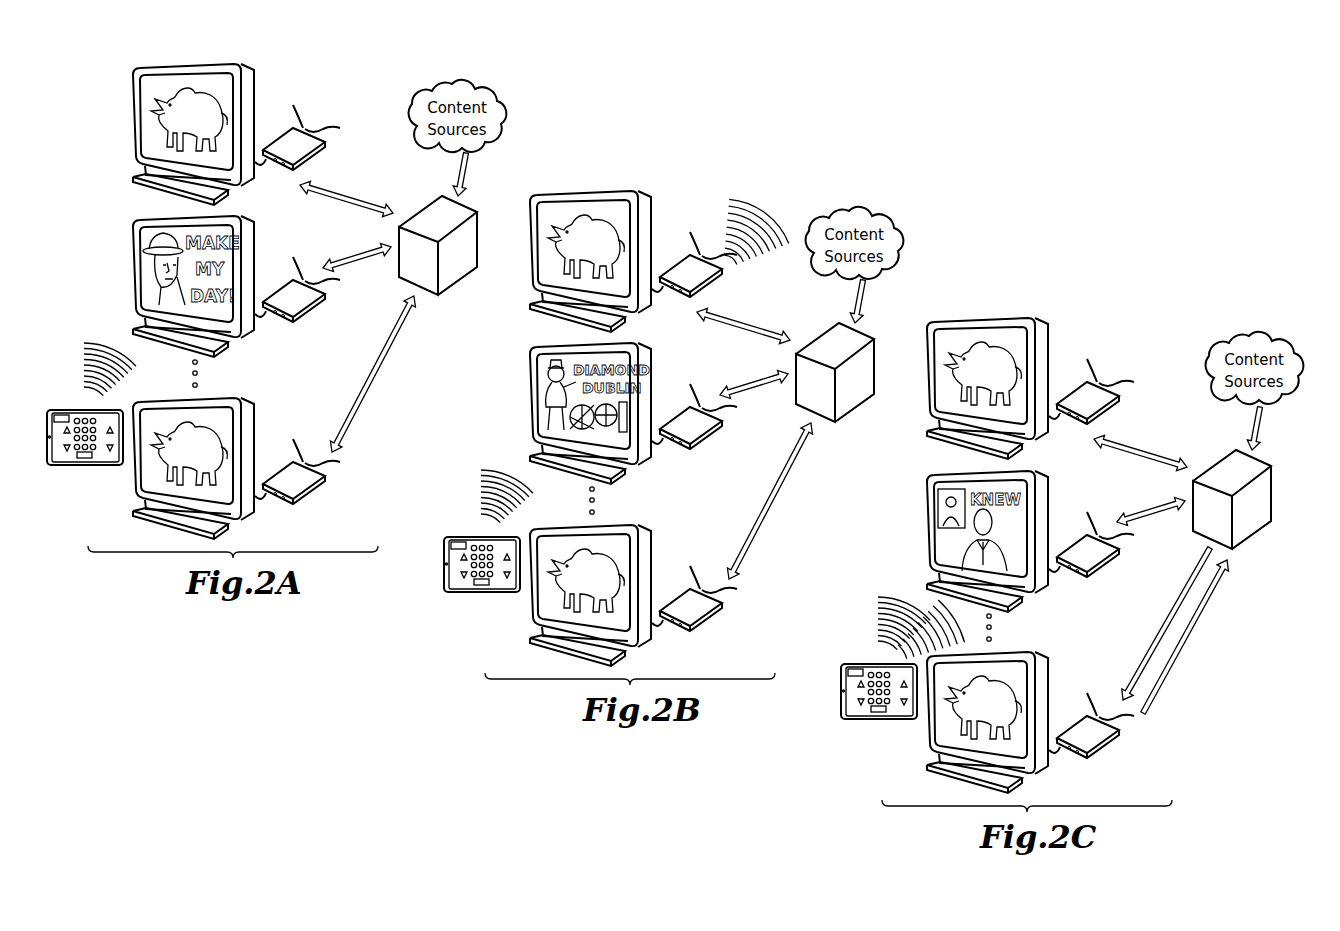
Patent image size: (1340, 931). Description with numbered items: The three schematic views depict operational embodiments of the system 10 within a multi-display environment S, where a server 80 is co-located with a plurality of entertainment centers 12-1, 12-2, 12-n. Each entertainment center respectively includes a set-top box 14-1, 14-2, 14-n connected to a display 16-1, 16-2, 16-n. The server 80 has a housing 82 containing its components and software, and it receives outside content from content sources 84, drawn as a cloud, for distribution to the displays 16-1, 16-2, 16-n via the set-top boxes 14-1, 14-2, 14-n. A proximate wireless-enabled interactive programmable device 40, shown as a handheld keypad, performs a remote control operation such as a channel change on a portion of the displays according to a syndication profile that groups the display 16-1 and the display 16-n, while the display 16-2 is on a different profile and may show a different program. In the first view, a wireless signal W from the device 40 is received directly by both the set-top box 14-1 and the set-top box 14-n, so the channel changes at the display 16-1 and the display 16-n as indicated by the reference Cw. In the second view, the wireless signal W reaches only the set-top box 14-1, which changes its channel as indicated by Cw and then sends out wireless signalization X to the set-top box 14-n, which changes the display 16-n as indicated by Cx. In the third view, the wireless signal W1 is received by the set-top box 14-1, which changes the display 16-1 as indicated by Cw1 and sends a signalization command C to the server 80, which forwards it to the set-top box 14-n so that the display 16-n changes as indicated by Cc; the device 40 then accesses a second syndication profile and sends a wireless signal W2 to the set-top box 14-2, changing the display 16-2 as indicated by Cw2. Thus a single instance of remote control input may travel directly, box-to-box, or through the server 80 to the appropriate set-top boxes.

In FIG. 2A, the system 10 is at (373, 99).
In FIG. 2B, the system 10 is at (782, 350).
In FIG. 2C, the system 10 is at (1218, 373).
In FIG. 2A, the entertainment center 12-1 is at (311, 121).
In FIG. 2B, the entertainment center 12-1 is at (713, 234).
In FIG. 2C, the entertainment center 12-1 is at (1110, 361).
In FIG. 2A, the entertainment center 12-2 is at (311, 273).
In FIG. 2B, the entertainment center 12-2 is at (713, 386).
In FIG. 2C, the entertainment center 12-2 is at (1110, 514).
In FIG. 2A, the entertainment center 12-n is at (311, 455).
In FIG. 2B, the entertainment center 12-n is at (713, 568).
In FIG. 2C, the entertainment center 12-n is at (1110, 695).
In FIG. 2A, the set-top box 14-1 is at (317, 153).
In FIG. 2B, the set-top box 14-1 is at (710, 276).
In FIG. 2C, the set-top box 14-1 is at (1107, 403).
In FIG. 2A, the set-top box 14-2 is at (317, 305).
In FIG. 2B, the set-top box 14-2 is at (710, 428).
In FIG. 2C, the set-top box 14-2 is at (1107, 556).
In FIG. 2A, the set-top box 14-n is at (317, 487).
In FIG. 2B, the set-top box 14-n is at (710, 610).
In FIG. 2C, the set-top box 14-n is at (1107, 737).
In FIG. 2A, the display 16-1 is at (255, 69).
In FIG. 2B, the display 16-1 is at (624, 258).
In FIG. 2C, the display 16-1 is at (1021, 385).
In FIG. 2A, the display 16-2 is at (255, 221).
In FIG. 2B, the display 16-2 is at (624, 410).
In FIG. 2C, the display 16-2 is at (1021, 538).
In FIG. 2A, the display 16-n is at (255, 403).
In FIG. 2B, the display 16-n is at (624, 592).
In FIG. 2C, the display 16-n is at (1021, 719).
In FIG. 2A, the proximate wireless-enabled interactive programmable device 40 is at (58, 403).
In FIG. 2B, the proximate wireless-enabled interactive programmable device 40 is at (482, 535).
In FIG. 2C, the proximate wireless-enabled interactive programmable device 40 is at (879, 660).
In FIG. 2A, the server 80 is at (417, 203).
In FIG. 2B, the server 80 is at (835, 352).
In FIG. 2C, the server 80 is at (1232, 480).
In FIG. 2A, the housing 82 is at (455, 278).
In FIG. 2B, the housing 82 is at (854, 429).
In FIG. 2C, the housing 82 is at (1257, 554).
In FIG. 2A, the content sources 84 is at (469, 82).
In FIG. 2B, the content sources 84 is at (855, 224).
In FIG. 2C, the content sources 84 is at (1255, 350).
In FIG. 2A, the multi-display environment S is at (78, 263).
In FIG. 2B, the multi-display environment S is at (464, 396).
In FIG. 2C, the multi-display environment S is at (881, 488).
In FIG. 2A, the wireless signal W is at (107, 343).
In FIG. 2B, the wireless signal W is at (507, 472).
In FIG. 2B, the wireless signalization X is at (756, 219).
In FIG. 2C, the signalization command C is at (1162, 553).
In FIG. 2A, the channel change indication Cw is at (100, 487).
In FIG. 2B, the channel change indication Cw is at (551, 249).
In FIG. 2B, the channel change indication Cx is at (552, 590).
In FIG. 2C, the channel change indication Cc is at (951, 718).
In FIG. 2C, the channel change indication Cw1 is at (946, 383).
In FIG. 2C, the channel change indication Cw2 is at (900, 525).
In FIG. 2C, the wireless signal W1 is at (904, 598).
In FIG. 2C, the wireless signal W2 is at (977, 629).